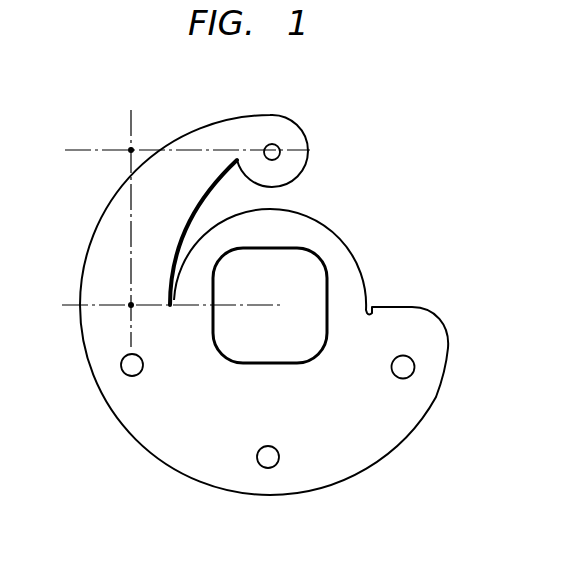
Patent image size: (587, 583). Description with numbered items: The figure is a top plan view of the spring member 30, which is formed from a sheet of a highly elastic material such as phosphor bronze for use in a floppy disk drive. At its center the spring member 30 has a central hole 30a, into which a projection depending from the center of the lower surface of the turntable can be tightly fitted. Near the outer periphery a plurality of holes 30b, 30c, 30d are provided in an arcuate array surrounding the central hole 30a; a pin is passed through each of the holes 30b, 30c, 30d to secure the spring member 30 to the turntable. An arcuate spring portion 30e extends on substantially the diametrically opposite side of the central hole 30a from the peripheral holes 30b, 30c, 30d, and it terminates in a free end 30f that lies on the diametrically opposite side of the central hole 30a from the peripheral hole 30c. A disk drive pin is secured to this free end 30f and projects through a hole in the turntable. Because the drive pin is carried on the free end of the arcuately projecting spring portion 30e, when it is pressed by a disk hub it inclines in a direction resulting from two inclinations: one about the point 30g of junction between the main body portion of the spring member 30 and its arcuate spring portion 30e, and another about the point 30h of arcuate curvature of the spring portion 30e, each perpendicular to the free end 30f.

The spring member 30 is at (95, 240).
The central hole 30a is at (312, 265).
The peripheral hole 30b is at (408, 368).
The peripheral hole 30c is at (273, 466).
The peripheral hole 30d is at (125, 373).
The arcuate spring portion 30e is at (197, 160).
The free end 30f is at (308, 152).
The point of junction 30g is at (131, 305).
The point of arcuate curvature 30h is at (131, 150).